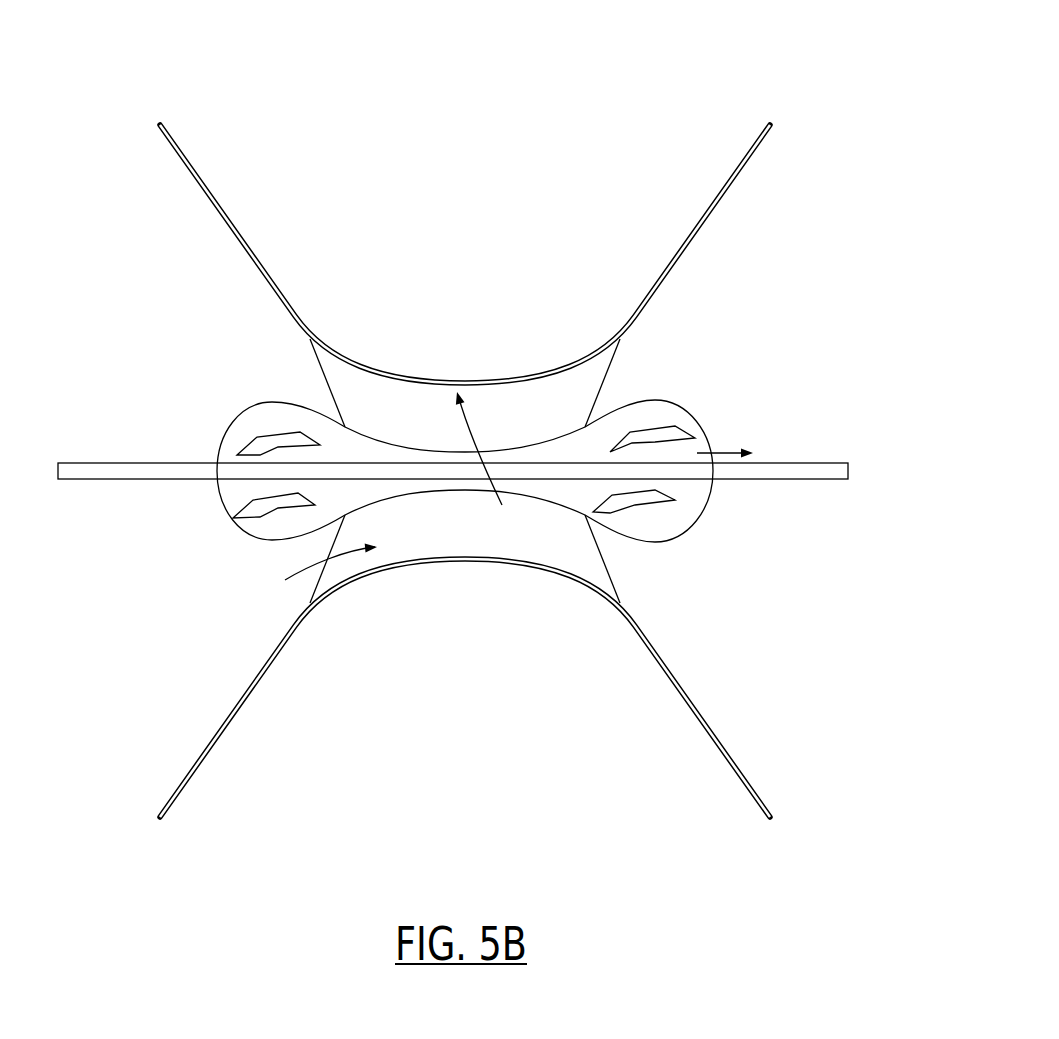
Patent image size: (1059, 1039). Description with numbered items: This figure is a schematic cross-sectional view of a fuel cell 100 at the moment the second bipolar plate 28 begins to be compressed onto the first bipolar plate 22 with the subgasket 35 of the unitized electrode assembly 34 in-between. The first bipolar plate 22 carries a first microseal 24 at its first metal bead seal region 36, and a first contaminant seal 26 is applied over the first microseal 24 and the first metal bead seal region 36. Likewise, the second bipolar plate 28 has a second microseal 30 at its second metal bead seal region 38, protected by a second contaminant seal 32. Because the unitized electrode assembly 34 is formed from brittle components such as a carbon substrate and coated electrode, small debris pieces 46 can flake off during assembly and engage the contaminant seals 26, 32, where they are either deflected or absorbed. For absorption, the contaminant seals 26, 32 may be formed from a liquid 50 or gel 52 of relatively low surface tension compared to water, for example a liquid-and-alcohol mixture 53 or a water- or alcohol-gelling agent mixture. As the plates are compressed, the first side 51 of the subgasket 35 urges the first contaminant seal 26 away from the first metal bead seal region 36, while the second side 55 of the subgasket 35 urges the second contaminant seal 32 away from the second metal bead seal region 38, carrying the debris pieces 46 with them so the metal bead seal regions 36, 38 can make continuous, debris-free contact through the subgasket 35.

The fuel cell 100 is at (111, 121).
The first bipolar plate 22 is at (762, 800).
The first microseal 24 is at (587, 540).
The first contaminant seal 26 is at (700, 490).
The second bipolar plate 28 is at (210, 202).
The second microseal 30 is at (348, 403).
The second contaminant seal 32 is at (697, 425).
The unitized electrode assembly 34 is at (785, 472).
The subgasket 35 is at (663, 406).
The first metal bead seal region 36 is at (320, 568).
The second metal bead seal region 38 is at (483, 464).
The debris piece 46 is at (404, 471).
The liquid 50 is at (206, 485).
The first side of the subgasket 51 is at (673, 485).
The gel 52 is at (206, 485).
The liquid-and-alcohol mixture 53 is at (230, 452).
The second side of the subgasket 55 is at (635, 442).